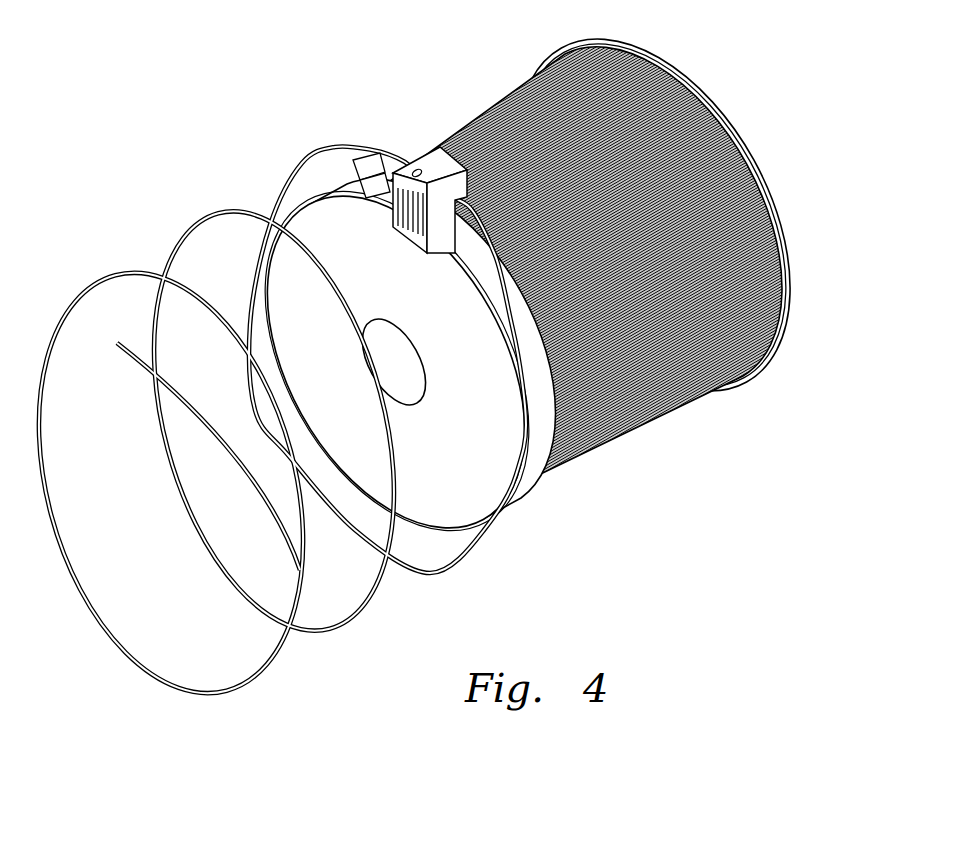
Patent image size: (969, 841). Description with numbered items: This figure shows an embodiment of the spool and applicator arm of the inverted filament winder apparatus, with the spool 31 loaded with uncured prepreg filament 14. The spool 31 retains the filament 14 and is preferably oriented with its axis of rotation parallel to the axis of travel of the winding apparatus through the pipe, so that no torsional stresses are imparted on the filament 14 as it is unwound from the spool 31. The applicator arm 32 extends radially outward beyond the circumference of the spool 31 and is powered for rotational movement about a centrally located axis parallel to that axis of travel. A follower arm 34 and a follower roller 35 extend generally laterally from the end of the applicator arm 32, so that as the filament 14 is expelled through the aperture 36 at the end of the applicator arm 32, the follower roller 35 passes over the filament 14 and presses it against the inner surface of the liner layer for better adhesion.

The filament 14 is at (344, 632).
The spool 31 is at (538, 465).
The applicator arm 32 is at (436, 158).
The follower arm 34 is at (358, 182).
The follower roller 35 is at (368, 160).
The aperture 36 is at (412, 165).